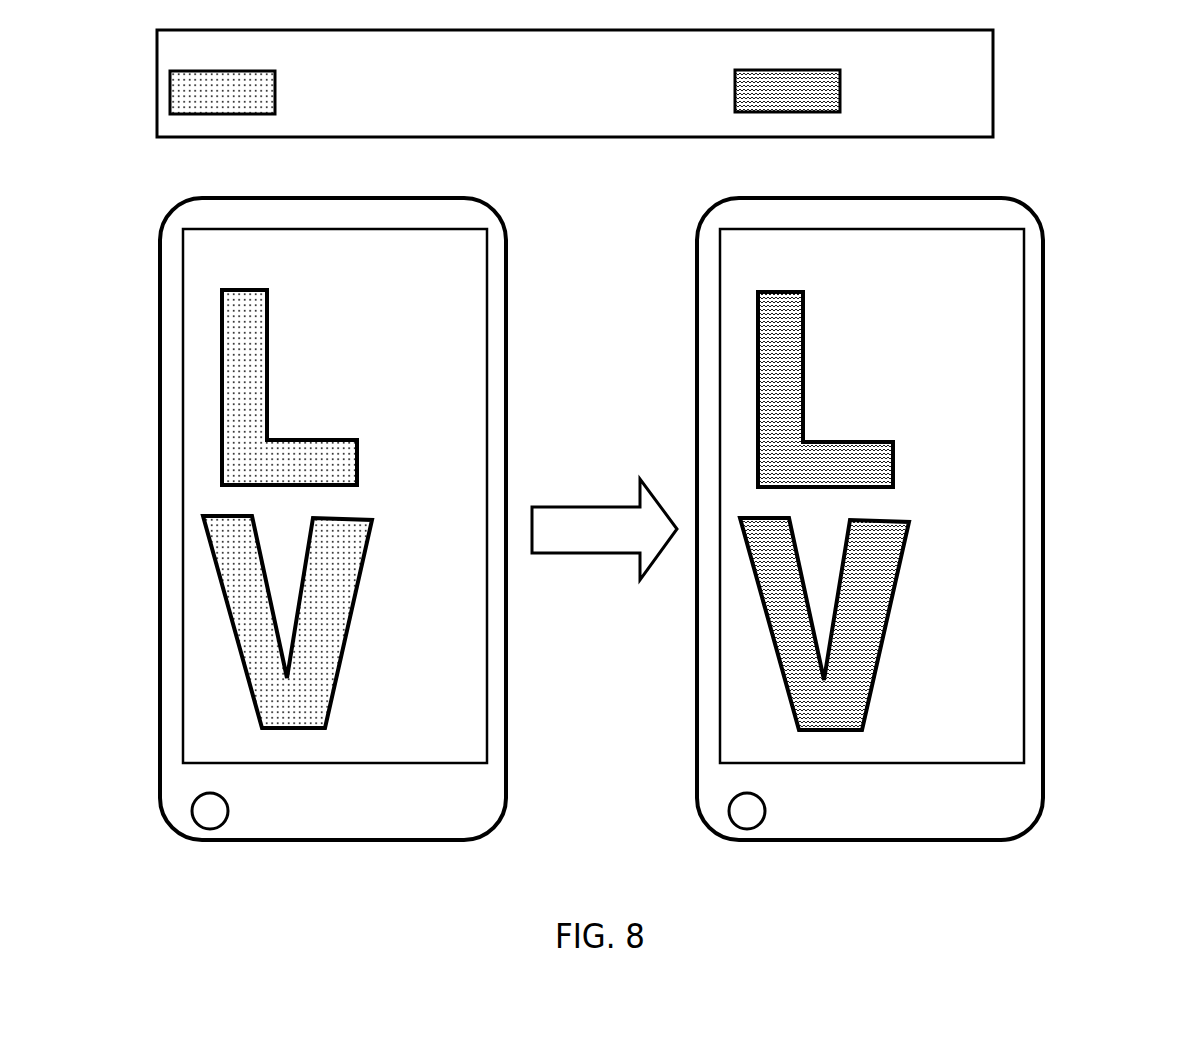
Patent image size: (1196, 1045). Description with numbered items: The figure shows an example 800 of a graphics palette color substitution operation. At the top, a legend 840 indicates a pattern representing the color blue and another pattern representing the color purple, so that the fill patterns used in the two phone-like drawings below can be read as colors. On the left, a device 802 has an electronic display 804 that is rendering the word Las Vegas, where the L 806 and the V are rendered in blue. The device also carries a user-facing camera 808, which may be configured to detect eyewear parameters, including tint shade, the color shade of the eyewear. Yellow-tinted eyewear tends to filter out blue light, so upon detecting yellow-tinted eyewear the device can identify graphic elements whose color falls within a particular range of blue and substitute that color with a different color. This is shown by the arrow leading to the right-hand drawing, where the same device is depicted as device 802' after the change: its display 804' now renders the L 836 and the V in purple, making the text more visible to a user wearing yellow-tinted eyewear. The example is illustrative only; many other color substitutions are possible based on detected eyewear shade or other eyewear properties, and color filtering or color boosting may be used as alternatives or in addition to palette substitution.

The example of graphics palette color substitution operation 800 is at (1100, 130).
The device 802 is at (333, 497).
The electronic display 804 is at (351, 457).
The L 806 is at (255, 342).
The user-facing camera 808 is at (217, 805).
The legend 840 is at (975, 62).
The device 802' is at (870, 495).
The display 804' is at (886, 457).
The L 836 is at (785, 363).